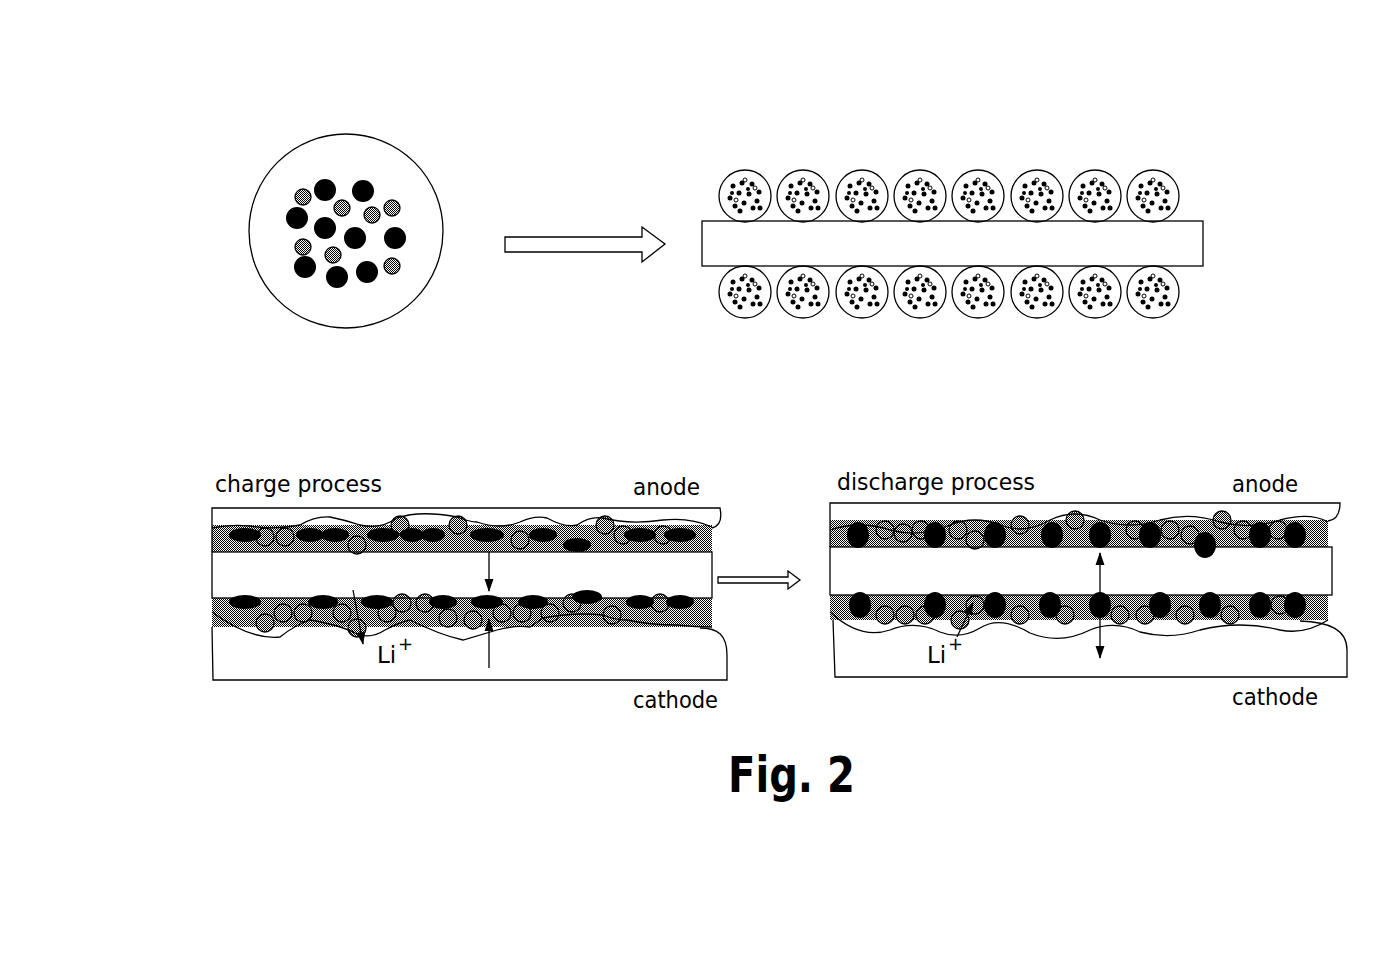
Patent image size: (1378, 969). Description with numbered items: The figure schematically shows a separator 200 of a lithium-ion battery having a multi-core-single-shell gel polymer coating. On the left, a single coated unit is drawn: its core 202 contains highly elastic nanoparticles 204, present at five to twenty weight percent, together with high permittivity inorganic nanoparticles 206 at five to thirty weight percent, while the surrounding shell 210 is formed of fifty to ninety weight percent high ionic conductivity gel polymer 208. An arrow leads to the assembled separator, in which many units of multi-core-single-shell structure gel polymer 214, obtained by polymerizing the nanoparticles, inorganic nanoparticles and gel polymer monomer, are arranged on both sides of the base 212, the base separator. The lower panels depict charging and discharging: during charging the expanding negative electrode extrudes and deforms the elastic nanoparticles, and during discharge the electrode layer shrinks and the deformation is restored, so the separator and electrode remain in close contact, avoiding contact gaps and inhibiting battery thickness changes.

The separator 200 is at (1352, 57).
The core 202 is at (238, 167).
The highly elastic nanoparticles 204 is at (338, 288).
The high permittivity inorganic nanoparticles 206 is at (398, 273).
The gel polymer 208 is at (403, 166).
The shell 210 is at (317, 134).
The base 212 is at (1209, 238).
The multi-core-single-shell structure gel polymer 214 is at (847, 169).